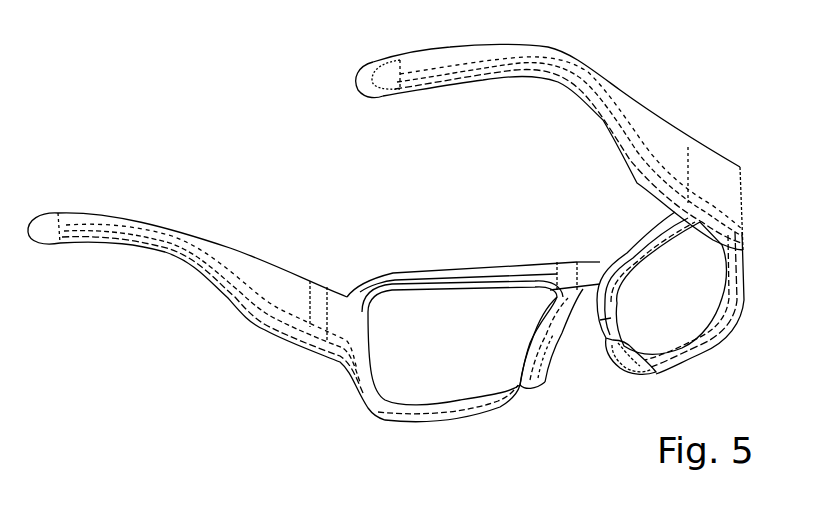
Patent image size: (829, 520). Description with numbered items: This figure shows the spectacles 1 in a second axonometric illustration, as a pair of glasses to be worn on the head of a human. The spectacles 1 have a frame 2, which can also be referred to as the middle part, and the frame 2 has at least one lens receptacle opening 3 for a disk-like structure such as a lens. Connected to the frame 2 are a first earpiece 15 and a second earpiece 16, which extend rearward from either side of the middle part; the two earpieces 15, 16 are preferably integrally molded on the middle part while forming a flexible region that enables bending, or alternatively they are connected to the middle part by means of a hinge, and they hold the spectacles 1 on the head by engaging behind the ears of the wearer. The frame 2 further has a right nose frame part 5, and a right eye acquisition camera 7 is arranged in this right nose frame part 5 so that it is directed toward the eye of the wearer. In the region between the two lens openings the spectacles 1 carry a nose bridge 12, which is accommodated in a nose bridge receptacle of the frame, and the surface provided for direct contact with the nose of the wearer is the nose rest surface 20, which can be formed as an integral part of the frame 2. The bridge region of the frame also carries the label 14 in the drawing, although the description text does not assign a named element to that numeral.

The spectacles 1 is at (345, 160).
The frame 2 is at (730, 310).
The lens receptacle opening 3 is at (420, 300).
The right nose frame part 5 is at (613, 312).
The right eye acquisition camera 7 is at (611, 328).
The nose bridge 12 is at (548, 348).
The bridge 14 is at (567, 262).
The first earpiece 15 is at (628, 102).
The second earpiece 16 is at (183, 236).
The nose rest surface 20 is at (547, 367).